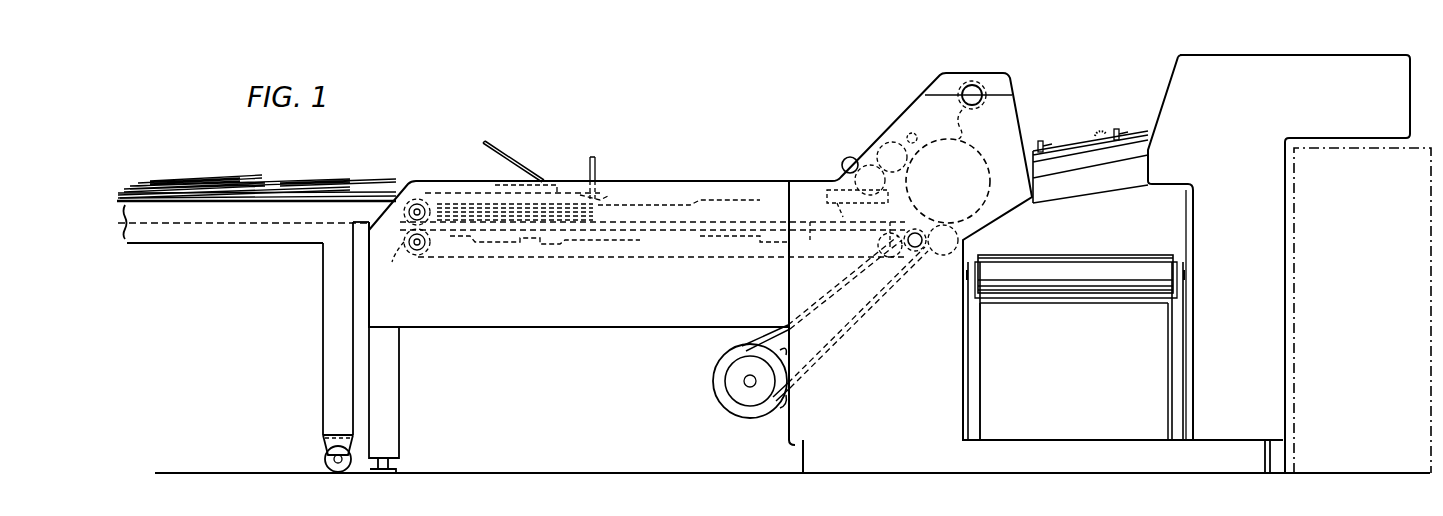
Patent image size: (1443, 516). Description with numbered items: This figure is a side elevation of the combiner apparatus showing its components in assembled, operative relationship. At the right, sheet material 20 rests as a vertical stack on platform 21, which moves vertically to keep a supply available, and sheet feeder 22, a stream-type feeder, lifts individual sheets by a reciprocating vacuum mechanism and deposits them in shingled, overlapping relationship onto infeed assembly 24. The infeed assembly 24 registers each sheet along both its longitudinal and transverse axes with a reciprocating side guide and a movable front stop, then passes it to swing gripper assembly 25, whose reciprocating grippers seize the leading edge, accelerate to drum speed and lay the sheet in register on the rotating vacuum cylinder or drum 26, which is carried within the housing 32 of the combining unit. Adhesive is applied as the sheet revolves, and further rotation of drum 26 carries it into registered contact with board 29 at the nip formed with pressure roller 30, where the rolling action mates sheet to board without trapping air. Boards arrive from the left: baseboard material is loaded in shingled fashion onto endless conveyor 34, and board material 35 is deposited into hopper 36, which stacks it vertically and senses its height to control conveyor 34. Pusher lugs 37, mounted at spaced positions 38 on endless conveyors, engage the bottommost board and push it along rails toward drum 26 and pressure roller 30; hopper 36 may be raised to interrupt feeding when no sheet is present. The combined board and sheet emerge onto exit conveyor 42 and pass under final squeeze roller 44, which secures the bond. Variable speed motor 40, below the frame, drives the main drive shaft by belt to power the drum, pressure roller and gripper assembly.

The sheet material 20 is at (1366, 284).
The platform 21 is at (1347, 463).
The sheet feeder 22 is at (1353, 106).
The infeed assembly 24 is at (1103, 113).
The swing gripper assembly 25 is at (982, 87).
The vacuum cylinder or drum 26 is at (992, 178).
The board 29 is at (832, 173).
The pressure roller 30 is at (965, 243).
The housing 32 is at (1008, 134).
The endless conveyor 34 is at (163, 200).
The board material 35 is at (226, 186).
The hopper / board feeder 36 is at (465, 158).
The pusher lugs 37 is at (703, 193).
The lug mounting positions on endless conveyors 38 is at (557, 260).
The variable speed motor 40 is at (723, 408).
The exit conveyor 42 is at (1042, 302).
The final squeeze roller 44 is at (1127, 263).